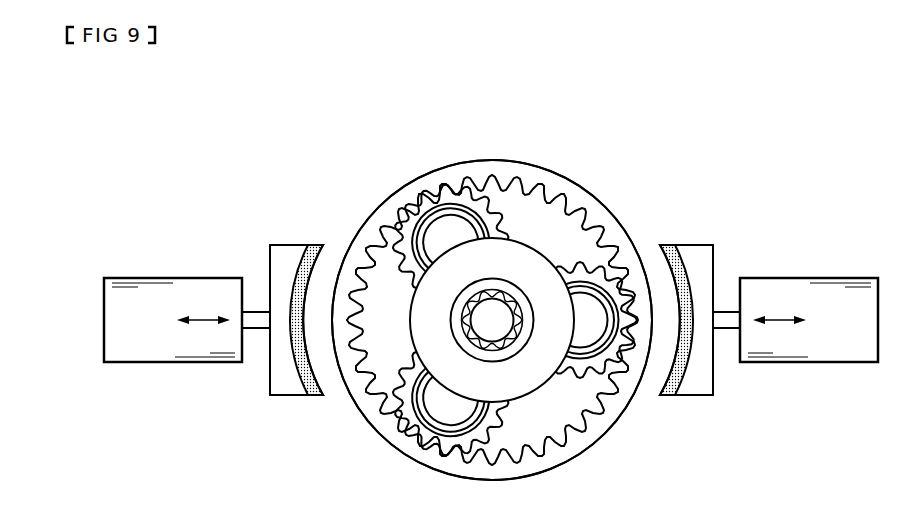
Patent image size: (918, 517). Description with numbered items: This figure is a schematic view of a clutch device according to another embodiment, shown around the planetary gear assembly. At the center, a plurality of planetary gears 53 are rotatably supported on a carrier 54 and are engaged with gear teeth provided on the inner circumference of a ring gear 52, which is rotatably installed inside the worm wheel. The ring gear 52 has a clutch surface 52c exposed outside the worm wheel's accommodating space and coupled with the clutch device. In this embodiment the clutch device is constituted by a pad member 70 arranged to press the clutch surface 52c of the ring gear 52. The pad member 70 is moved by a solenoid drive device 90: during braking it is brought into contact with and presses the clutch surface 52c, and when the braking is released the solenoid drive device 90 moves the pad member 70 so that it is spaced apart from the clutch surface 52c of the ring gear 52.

The ring gear 52 is at (592, 210).
The clutch surface 52c is at (568, 178).
The planetary gears 53 is at (427, 208).
The carrier 54 is at (520, 255).
The pad member 70 is at (285, 390).
The solenoid drive device 90 is at (140, 353).